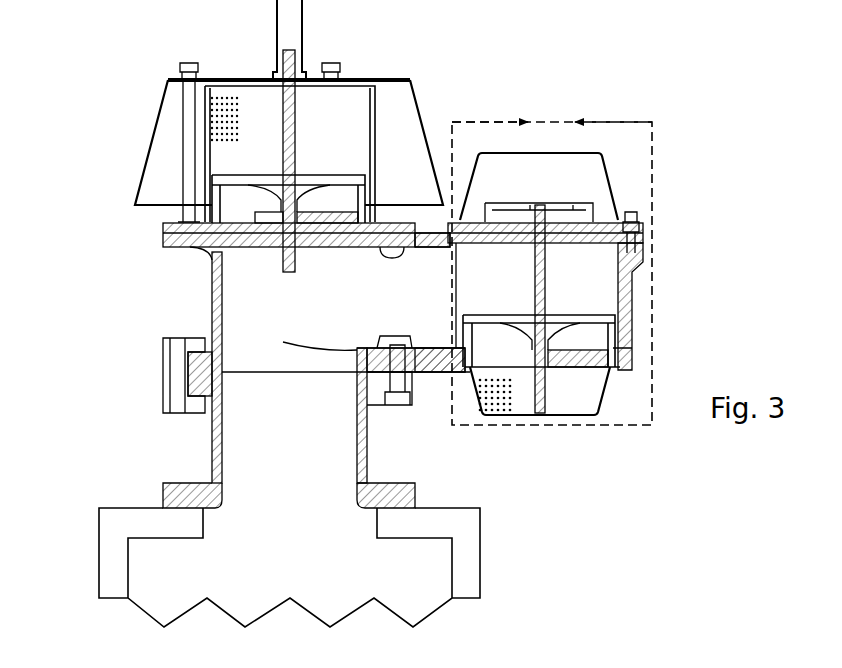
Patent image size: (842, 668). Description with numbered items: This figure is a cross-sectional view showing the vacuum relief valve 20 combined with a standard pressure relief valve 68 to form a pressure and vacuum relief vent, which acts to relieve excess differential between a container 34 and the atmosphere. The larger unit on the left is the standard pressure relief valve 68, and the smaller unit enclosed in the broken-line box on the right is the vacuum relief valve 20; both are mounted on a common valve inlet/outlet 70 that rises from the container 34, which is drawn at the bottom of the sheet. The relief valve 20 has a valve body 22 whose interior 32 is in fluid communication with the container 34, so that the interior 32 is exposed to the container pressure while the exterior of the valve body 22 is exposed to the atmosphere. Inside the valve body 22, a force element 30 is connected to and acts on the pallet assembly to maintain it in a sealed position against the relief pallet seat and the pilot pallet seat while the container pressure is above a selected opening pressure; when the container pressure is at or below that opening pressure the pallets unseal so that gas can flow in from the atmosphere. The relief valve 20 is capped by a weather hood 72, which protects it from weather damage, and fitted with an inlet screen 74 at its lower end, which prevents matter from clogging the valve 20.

The standard pressure relief valve 68 is at (113, 135).
The valve inlet/outlet 70 is at (237, 455).
The container 34 is at (415, 580).
The relief valve 20 is at (662, 228).
The weather hood 72 is at (556, 160).
The interior 32 is at (608, 290).
The valve body 22 is at (630, 308).
The force element 30 is at (545, 382).
The inlet screen 74 is at (570, 410).